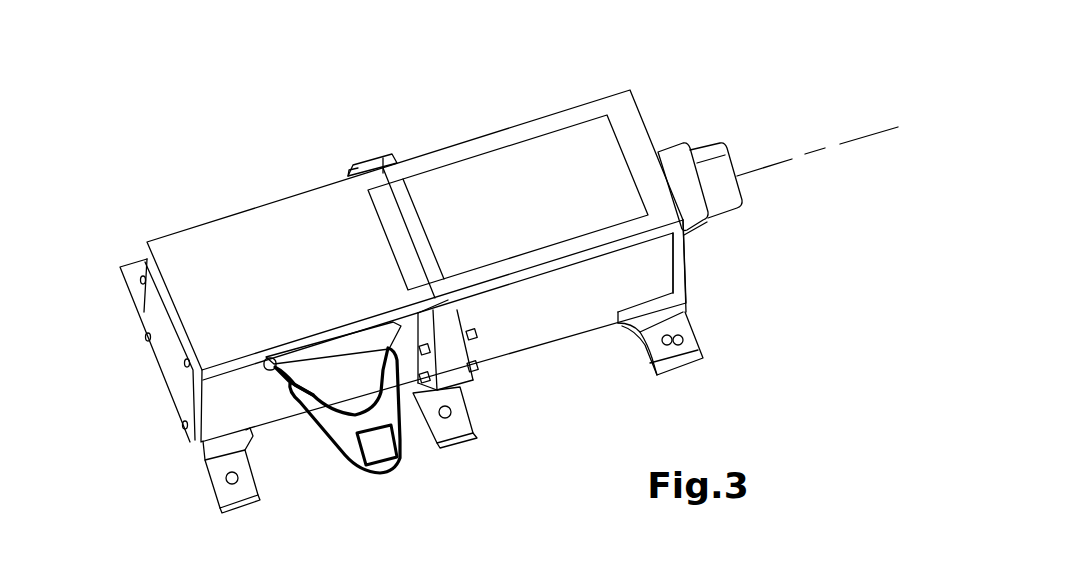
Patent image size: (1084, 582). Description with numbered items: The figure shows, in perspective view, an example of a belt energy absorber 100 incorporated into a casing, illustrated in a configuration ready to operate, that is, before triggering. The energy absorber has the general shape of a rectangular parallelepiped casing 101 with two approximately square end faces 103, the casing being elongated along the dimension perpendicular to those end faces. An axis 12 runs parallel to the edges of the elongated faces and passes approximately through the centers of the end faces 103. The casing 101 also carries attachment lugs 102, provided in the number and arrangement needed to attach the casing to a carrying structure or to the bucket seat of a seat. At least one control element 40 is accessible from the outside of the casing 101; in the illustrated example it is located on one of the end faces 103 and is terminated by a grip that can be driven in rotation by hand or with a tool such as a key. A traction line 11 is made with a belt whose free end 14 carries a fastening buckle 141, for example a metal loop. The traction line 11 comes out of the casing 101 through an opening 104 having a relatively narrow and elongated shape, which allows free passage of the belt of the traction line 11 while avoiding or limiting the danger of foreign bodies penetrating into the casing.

The energy absorber 100 is at (285, 135).
The casing 101 is at (326, 173).
The end faces 103 is at (640, 113).
The axis 12 is at (777, 160).
The control element 40 is at (728, 215).
The attachment lugs 102 is at (215, 467).
The free end 14 is at (378, 475).
The traction line 11 is at (323, 373).
The fastening buckle 141 is at (403, 443).
The opening 104 is at (270, 378).